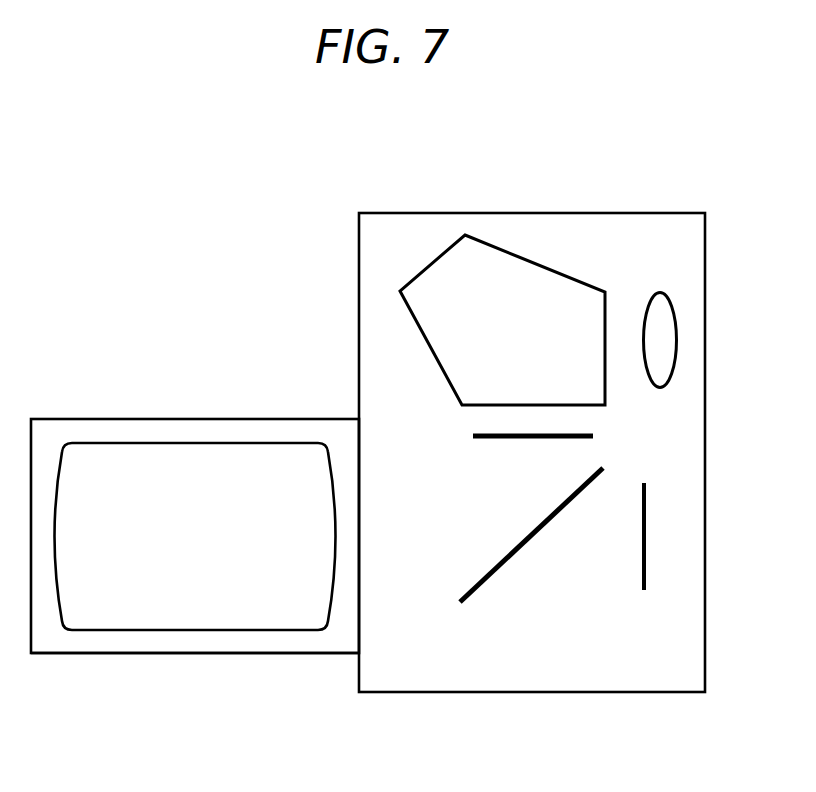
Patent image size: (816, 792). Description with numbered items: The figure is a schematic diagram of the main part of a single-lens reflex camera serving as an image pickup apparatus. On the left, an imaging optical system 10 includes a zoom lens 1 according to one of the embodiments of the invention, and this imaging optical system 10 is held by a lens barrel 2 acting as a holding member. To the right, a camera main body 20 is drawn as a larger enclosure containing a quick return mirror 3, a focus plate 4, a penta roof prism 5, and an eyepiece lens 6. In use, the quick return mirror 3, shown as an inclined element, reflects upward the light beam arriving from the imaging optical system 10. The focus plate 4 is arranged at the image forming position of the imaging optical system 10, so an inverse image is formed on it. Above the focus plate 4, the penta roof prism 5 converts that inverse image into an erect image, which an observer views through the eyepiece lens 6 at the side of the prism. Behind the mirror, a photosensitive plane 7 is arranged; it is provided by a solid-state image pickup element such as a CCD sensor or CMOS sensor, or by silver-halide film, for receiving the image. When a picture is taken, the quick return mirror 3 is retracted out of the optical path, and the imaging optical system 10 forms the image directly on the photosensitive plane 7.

The zoom lens 1 is at (150, 442).
The lens barrel 2 is at (182, 653).
The quick return mirror 3 is at (498, 567).
The focus plate 4 is at (513, 438).
The penta roof prism 5 is at (435, 258).
The eyepiece lens 6 is at (677, 341).
The photosensitive plane 7 is at (646, 525).
The imaging optical system 10 is at (275, 418).
The camera main body 20 is at (598, 190).